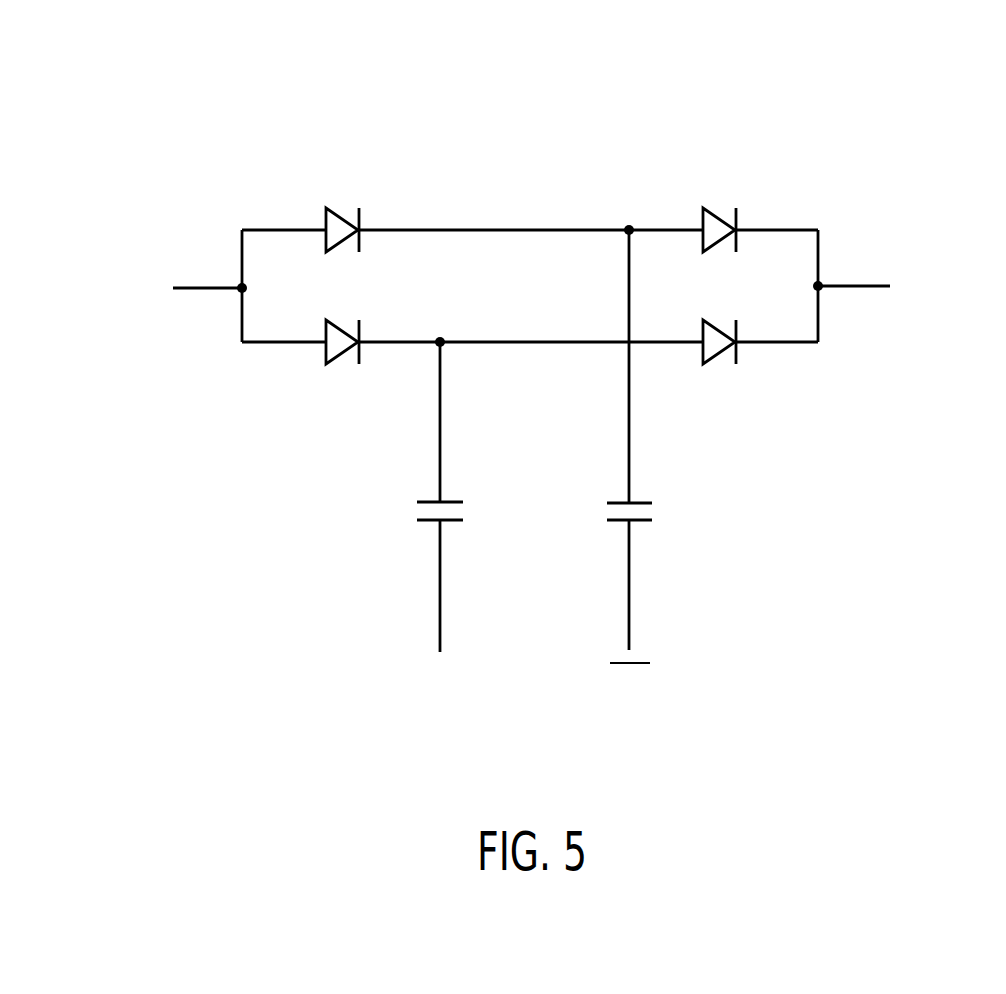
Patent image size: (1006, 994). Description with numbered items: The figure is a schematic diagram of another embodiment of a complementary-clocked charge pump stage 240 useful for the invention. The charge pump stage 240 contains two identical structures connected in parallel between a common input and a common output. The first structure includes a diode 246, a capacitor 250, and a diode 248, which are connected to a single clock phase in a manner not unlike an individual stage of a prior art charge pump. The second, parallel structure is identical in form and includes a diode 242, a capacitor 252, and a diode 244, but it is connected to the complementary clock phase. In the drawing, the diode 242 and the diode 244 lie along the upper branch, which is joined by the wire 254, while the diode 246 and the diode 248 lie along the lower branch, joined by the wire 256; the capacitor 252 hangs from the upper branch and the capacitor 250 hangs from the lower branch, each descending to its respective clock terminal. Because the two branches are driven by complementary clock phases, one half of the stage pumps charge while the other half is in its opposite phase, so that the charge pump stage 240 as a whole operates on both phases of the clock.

The charge pump stage 240 is at (880, 76).
The diode 242 is at (341, 216).
The diode 244 is at (713, 216).
The diode 246 is at (341, 357).
The diode 248 is at (713, 357).
The capacitor 250 is at (418, 510).
The capacitor 252 is at (652, 509).
The upper node 254 is at (483, 228).
The lower node 256 is at (532, 340).